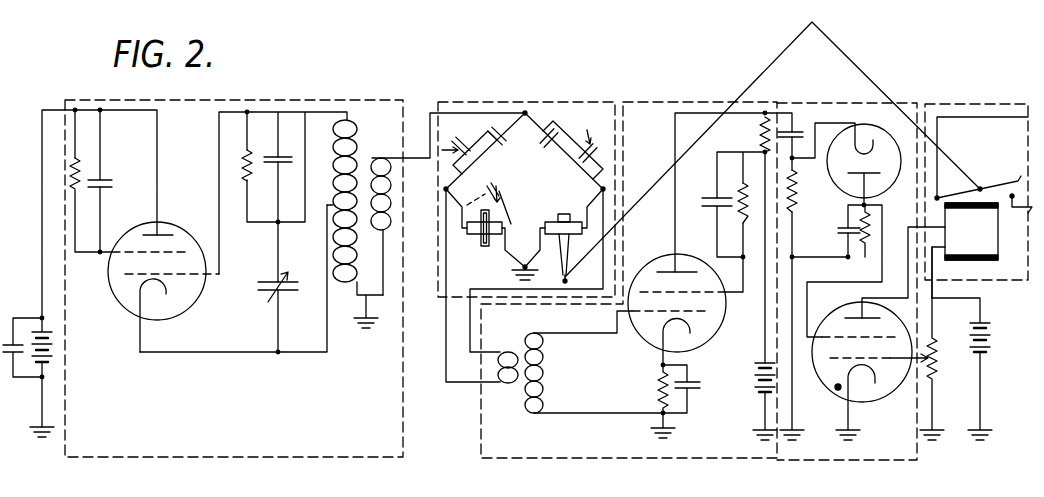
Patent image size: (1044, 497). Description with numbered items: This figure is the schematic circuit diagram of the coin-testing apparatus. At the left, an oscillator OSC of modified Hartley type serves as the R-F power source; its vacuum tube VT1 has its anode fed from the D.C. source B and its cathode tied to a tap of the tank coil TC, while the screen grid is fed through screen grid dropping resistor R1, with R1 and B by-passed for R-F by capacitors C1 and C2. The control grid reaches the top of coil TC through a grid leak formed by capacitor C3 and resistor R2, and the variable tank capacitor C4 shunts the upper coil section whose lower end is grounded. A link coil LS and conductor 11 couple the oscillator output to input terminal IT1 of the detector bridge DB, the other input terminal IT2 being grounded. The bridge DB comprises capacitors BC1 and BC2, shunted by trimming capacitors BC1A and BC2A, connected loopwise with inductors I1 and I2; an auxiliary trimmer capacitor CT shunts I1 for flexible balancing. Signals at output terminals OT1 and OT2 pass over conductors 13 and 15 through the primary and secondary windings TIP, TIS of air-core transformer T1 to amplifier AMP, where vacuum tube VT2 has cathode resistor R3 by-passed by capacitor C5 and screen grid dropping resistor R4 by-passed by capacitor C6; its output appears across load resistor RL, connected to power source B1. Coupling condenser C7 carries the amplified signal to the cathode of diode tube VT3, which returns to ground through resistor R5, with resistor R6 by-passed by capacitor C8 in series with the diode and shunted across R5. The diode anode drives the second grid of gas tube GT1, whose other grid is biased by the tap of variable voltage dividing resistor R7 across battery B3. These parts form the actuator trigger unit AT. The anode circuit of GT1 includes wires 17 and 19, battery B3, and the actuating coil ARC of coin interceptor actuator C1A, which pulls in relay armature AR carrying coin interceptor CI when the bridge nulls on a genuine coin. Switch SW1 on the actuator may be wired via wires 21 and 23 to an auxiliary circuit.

The conductor 11 is at (424, 158).
The conductor 13 is at (446, 322).
The conductor 15 is at (470, 352).
The wire 17 is at (897, 298).
The wire 19 is at (932, 268).
The wire 21 is at (1034, 215).
The wire 23 is at (1036, 112).
The oscillator OSC is at (240, 100).
The detector bridge DB is at (497, 102).
The amplifier AMP is at (660, 102).
The actuator trigger unit AT is at (814, 103).
The vacuum tube VT1 is at (190, 305).
The vacuum tube VT2 is at (658, 263).
The diode tube VT3 is at (830, 182).
The tetrode gas tube GT1 is at (830, 318).
The screen grid dropping resistor R1 is at (78, 160).
The resistor R2 is at (247, 176).
The cathode resistor R3 is at (658, 378).
The screen grid dropping resistor R4 is at (738, 187).
The resistor R5 is at (798, 211).
The resistor R6 is at (873, 225).
The variable voltage dividing resistor R7 is at (937, 372).
The load resistor RL is at (758, 129).
The capacitor C1 is at (103, 178).
The capacitor C2 is at (7, 343).
The capacitor C3 is at (275, 165).
The variable tank capacitor C4 is at (280, 295).
The capacitor C5 is at (692, 385).
The capacitor C6 is at (715, 200).
The coupling condenser C7 is at (795, 129).
The capacitor C8 is at (840, 234).
The source of D.C. power B is at (55, 348).
The D.C. power source B1 is at (757, 382).
The battery B3 is at (990, 323).
The tank coil TC is at (357, 140).
The link LS is at (389, 228).
The air-core transformer T1 is at (534, 369).
The primary winding TIP is at (508, 385).
The secondary winding TIS is at (543, 378).
The input terminal IT1 is at (527, 112).
The input terminal IT2 is at (522, 268).
The output terminal OT1 is at (450, 189).
The output terminal OT2 is at (600, 190).
The capacitor BC1 is at (493, 146).
The capacitor BC2 is at (548, 144).
The trimming capacitor BC1A is at (470, 128).
The trimming capacitor BC2A is at (592, 122).
The auxiliary trimmer capacitor CT is at (500, 196).
The inductor I1 is at (505, 212).
The inductor I2 is at (553, 238).
The coin interceptor CI is at (568, 274).
The coin interceptor actuator C1A is at (993, 161).
The relay armature AR is at (968, 193).
The switch SW1 is at (1022, 176).
The actuating coil ARC is at (971, 231).